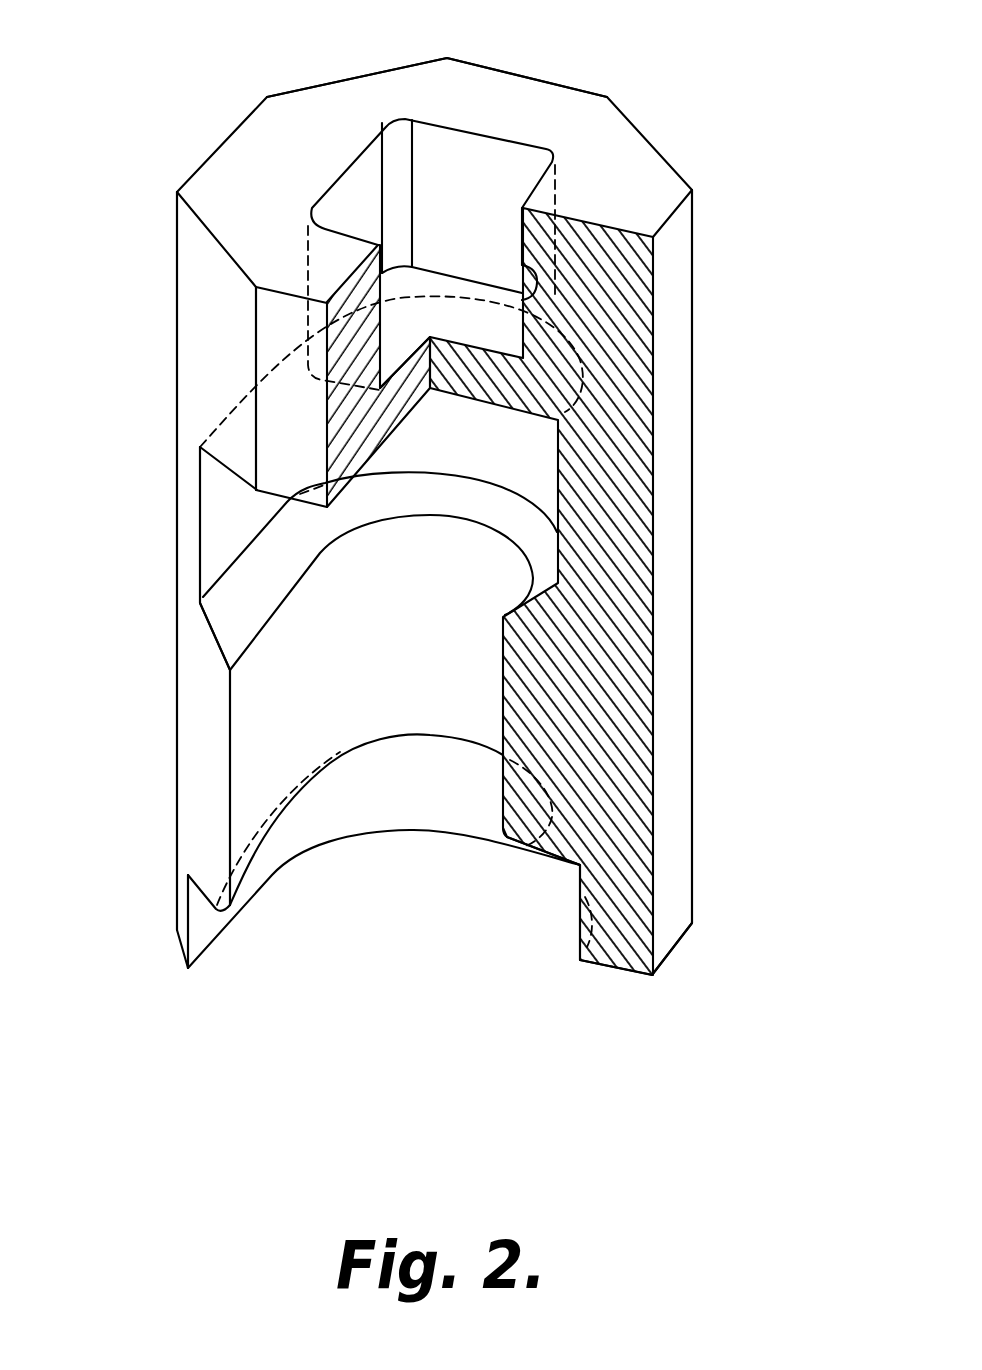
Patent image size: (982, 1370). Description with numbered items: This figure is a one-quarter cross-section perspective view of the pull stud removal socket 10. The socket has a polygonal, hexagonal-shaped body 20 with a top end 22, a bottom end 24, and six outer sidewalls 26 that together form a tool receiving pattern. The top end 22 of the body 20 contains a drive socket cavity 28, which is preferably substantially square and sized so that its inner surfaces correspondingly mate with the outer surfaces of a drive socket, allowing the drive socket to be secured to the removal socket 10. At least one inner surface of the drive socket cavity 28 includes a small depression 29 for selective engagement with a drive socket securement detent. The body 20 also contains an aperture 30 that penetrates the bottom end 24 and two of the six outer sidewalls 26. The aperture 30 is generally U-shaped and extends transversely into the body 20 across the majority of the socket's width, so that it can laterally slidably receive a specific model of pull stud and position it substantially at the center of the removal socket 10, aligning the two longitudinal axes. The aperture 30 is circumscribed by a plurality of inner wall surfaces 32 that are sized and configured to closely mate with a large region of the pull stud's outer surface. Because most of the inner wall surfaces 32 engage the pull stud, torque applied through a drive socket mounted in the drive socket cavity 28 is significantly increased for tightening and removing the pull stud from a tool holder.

The pull stud removal socket 10 is at (146, 112).
The body 20 is at (706, 399).
The top end 22 is at (523, 113).
The bottom end 24 is at (667, 960).
The outer sidewalls 26 is at (253, 343).
The drive socket cavity 28 is at (443, 173).
The small depression 29 is at (520, 270).
The aperture 30 is at (384, 902).
The inner wall surfaces 32 is at (213, 515).